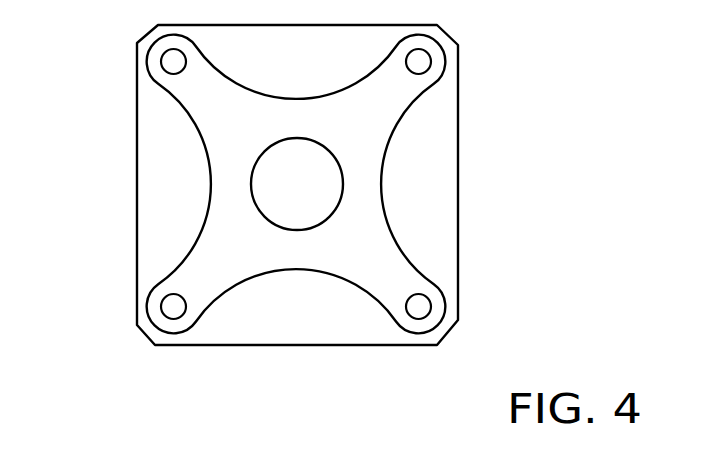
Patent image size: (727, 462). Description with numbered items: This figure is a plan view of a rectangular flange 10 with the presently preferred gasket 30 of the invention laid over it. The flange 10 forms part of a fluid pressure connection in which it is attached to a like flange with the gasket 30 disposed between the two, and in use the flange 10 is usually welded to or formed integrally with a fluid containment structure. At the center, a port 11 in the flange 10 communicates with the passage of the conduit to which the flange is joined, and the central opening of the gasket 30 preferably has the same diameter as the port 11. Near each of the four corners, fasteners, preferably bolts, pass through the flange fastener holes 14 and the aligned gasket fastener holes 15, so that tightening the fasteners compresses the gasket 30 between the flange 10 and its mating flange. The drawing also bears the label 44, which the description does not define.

The flange 10 is at (148, 121).
The gasket 30 is at (428, 110).
The mounting face 44 is at (372, 253).
The port 11 is at (292, 218).
The flange fastener hole 14 is at (421, 307).
The gasket fastener hole 15 is at (161, 298).